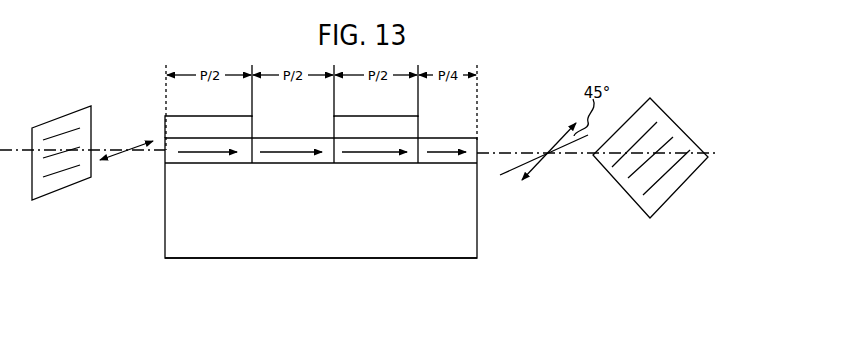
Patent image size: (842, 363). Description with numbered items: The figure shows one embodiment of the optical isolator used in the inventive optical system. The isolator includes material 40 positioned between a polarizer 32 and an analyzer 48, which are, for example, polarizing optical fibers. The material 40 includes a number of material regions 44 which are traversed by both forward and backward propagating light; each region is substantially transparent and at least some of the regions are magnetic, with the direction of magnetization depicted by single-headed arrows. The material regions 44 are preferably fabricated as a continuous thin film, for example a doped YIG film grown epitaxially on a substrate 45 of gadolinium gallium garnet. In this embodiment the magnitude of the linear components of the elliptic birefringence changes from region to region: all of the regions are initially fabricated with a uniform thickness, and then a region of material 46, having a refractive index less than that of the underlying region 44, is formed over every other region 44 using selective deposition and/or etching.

The polarizer 32 is at (58, 126).
The material 40 is at (165, 147).
The material regions 44 is at (210, 161).
The substrate 45 is at (316, 250).
The region of material 46 is at (250, 128).
The analyzer 48 is at (680, 138).